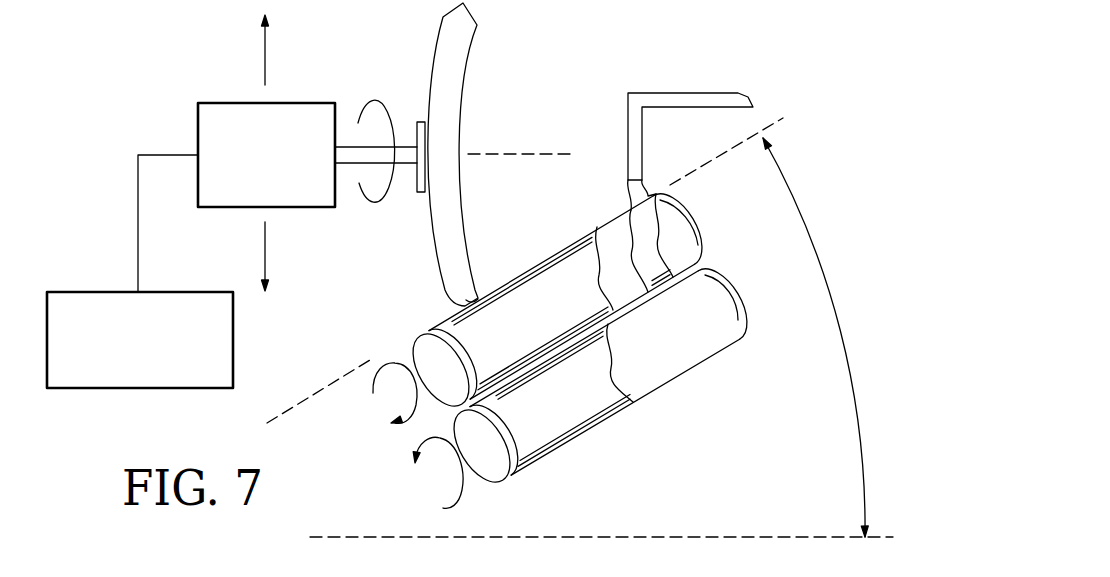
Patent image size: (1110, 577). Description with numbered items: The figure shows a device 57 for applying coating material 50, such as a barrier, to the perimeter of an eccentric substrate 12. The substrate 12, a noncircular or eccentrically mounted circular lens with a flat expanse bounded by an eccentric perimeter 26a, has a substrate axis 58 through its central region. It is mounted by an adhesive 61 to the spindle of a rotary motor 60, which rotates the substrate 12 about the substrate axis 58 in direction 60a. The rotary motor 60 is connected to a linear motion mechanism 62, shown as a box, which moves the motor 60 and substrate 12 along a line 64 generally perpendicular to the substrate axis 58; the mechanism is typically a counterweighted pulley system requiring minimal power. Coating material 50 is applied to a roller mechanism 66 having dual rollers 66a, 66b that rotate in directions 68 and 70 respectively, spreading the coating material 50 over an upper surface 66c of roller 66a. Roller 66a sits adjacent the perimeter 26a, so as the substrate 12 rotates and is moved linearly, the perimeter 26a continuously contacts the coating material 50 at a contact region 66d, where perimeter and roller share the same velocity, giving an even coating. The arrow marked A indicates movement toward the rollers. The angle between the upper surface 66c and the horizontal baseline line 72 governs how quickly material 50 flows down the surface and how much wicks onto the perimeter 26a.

The rotary motor 60 is at (213, 102).
The linear motion mechanism 62 is at (85, 291).
The line 64 is at (265, 52).
The direction 60a is at (362, 124).
The adhesive 61 is at (420, 197).
The substrate 12 is at (475, 122).
The substrate axis 58 is at (538, 152).
The device 57 is at (630, 70).
The roller mechanism 66 is at (699, 205).
The roller 66a is at (781, 251).
The roller 66b is at (816, 312).
The upper surface 66c is at (597, 232).
The region 66d is at (466, 298).
The coating material 50 is at (574, 447).
The perimeter 26a is at (428, 310).
The blade movement direction A is at (501, 266).
The direction 68 is at (390, 408).
The direction 70 is at (437, 470).
The line 72 is at (752, 538).